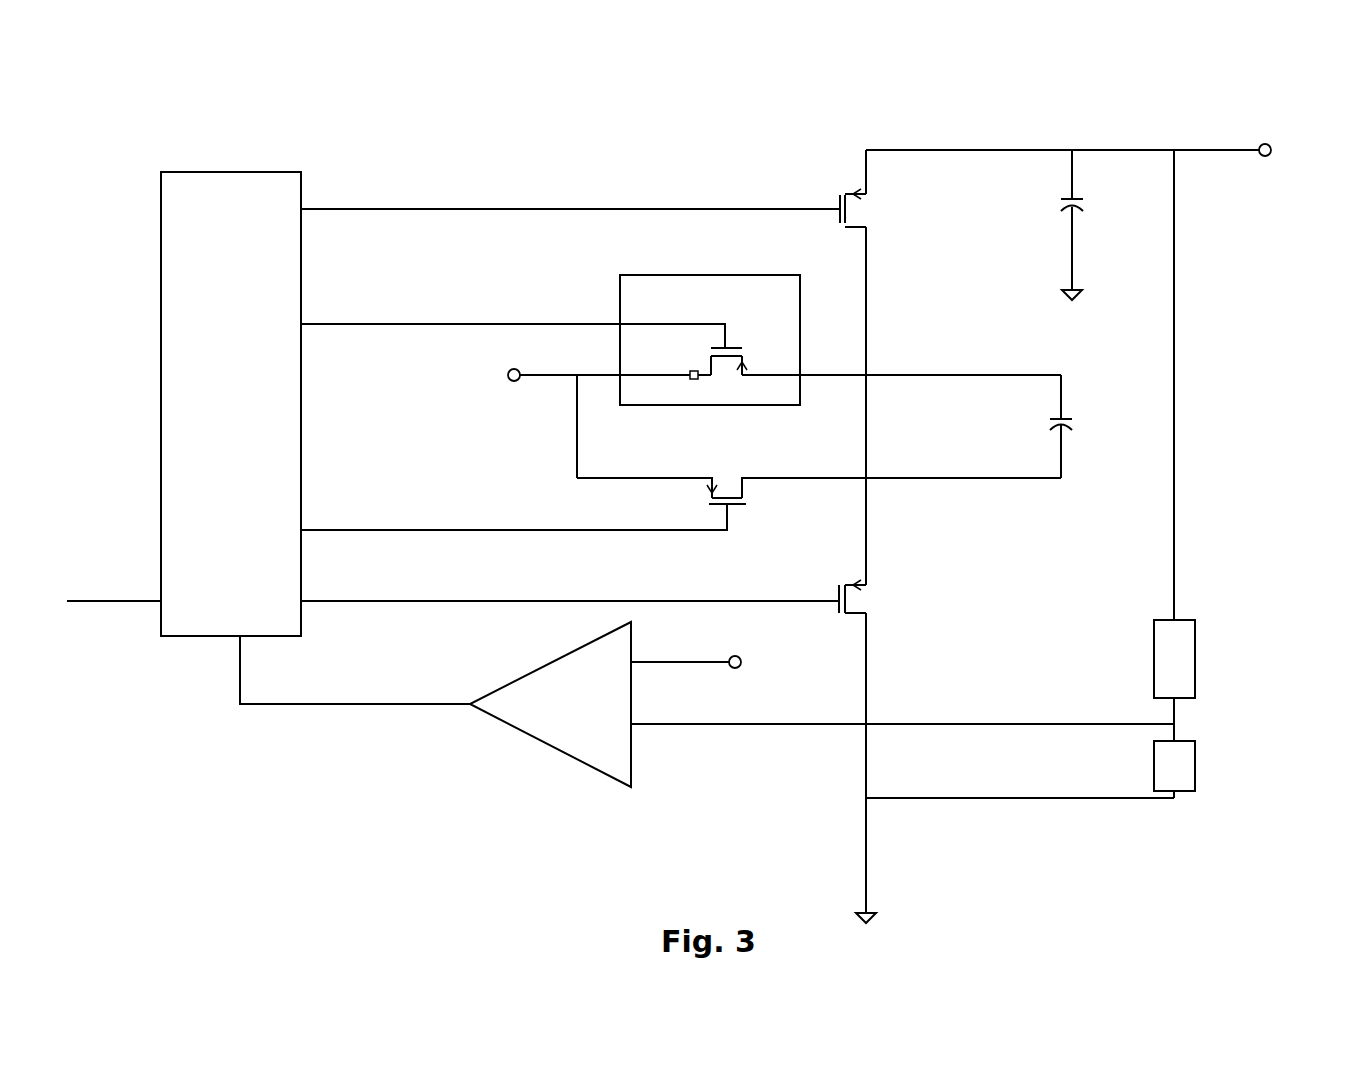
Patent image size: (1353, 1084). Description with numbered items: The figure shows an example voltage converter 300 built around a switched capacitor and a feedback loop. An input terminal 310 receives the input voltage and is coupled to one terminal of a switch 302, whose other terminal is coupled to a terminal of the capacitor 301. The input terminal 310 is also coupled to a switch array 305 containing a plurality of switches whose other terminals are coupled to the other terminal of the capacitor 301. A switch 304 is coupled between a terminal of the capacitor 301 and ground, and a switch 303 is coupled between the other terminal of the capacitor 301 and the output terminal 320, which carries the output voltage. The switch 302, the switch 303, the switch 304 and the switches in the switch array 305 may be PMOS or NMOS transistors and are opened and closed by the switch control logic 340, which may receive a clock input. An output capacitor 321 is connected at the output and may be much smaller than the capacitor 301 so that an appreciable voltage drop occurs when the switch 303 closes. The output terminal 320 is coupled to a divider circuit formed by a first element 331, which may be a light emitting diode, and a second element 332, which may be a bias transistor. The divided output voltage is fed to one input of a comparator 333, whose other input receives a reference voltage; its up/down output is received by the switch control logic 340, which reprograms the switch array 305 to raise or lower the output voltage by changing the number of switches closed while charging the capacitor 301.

The voltage converter 300 is at (592, 82).
The switch control logic 340 is at (210, 172).
The switch array 305 is at (632, 275).
The input terminal 310 is at (537, 382).
The switch 302 is at (728, 487).
The capacitor 301 is at (1052, 414).
The switch 303 is at (866, 212).
The switch 304 is at (864, 593).
The output capacitor 321 is at (1058, 205).
The output terminal 320 is at (1222, 150).
The comparator 333 is at (543, 743).
The divider element 331 is at (1154, 633).
The divider element 332 is at (1154, 772).